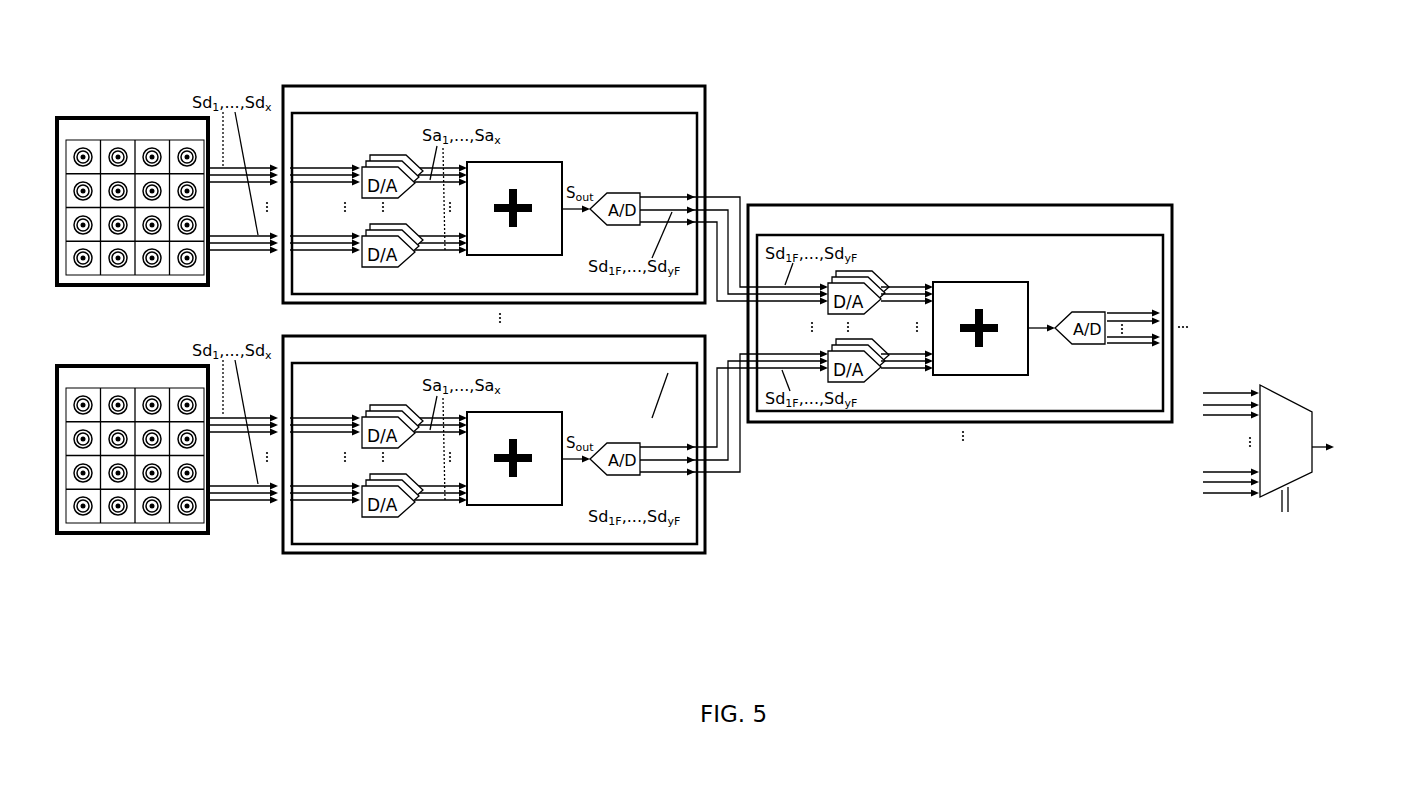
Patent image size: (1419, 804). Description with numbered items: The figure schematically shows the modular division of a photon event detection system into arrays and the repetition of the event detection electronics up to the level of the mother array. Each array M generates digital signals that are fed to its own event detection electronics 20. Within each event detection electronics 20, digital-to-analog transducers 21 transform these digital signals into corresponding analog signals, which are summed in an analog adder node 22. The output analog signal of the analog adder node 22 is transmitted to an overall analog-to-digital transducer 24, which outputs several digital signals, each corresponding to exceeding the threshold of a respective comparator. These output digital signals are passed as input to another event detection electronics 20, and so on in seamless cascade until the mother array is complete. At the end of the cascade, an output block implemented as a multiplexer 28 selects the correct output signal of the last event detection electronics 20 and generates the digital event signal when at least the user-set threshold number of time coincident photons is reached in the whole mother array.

The event detection electronics 20 is at (476, 80).
The digital-to-analog transducer 21 is at (380, 152).
The analog adder node 22 is at (517, 160).
The overall analog-to-digital transducer 24 is at (620, 192).
The multiplexer 28 is at (1288, 396).
The array M is at (133, 118).